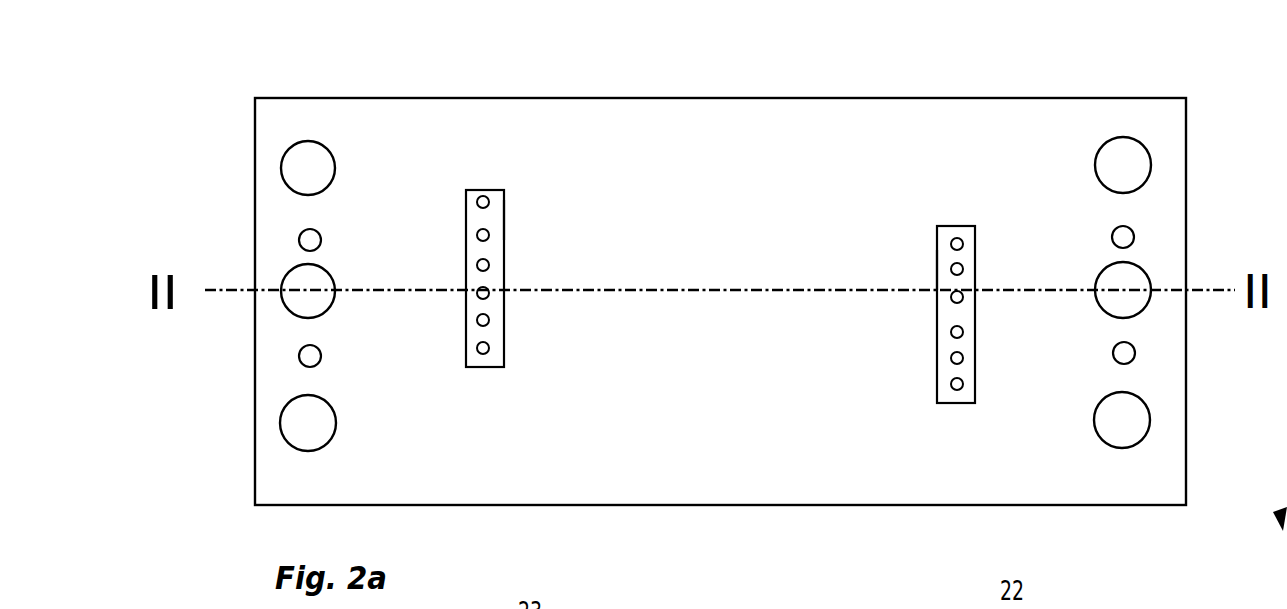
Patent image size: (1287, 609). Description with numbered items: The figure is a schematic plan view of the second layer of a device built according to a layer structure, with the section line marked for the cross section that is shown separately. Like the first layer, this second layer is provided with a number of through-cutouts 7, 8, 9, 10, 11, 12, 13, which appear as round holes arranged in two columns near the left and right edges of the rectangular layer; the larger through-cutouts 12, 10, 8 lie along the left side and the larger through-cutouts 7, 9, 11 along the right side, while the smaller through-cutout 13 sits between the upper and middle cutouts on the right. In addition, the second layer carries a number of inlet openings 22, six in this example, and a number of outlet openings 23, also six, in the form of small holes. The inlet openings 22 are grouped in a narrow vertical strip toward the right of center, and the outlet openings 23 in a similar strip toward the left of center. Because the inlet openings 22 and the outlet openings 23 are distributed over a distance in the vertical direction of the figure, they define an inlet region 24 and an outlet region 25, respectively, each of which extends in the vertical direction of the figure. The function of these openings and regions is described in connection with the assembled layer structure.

The through-cutout 7 is at (1123, 162).
The through-cutout 8 is at (293, 430).
The through-cutout 9 is at (1137, 285).
The through-cutout 10 is at (293, 303).
The through-cutout 11 is at (1135, 413).
The through-cutout 12 is at (305, 166).
The through-cutout 13 is at (1120, 240).
The inlet openings 22 is at (963, 240).
The outlet openings 23 is at (481, 200).
The inlet region 24 is at (937, 275).
The outlet region 25 is at (505, 227).